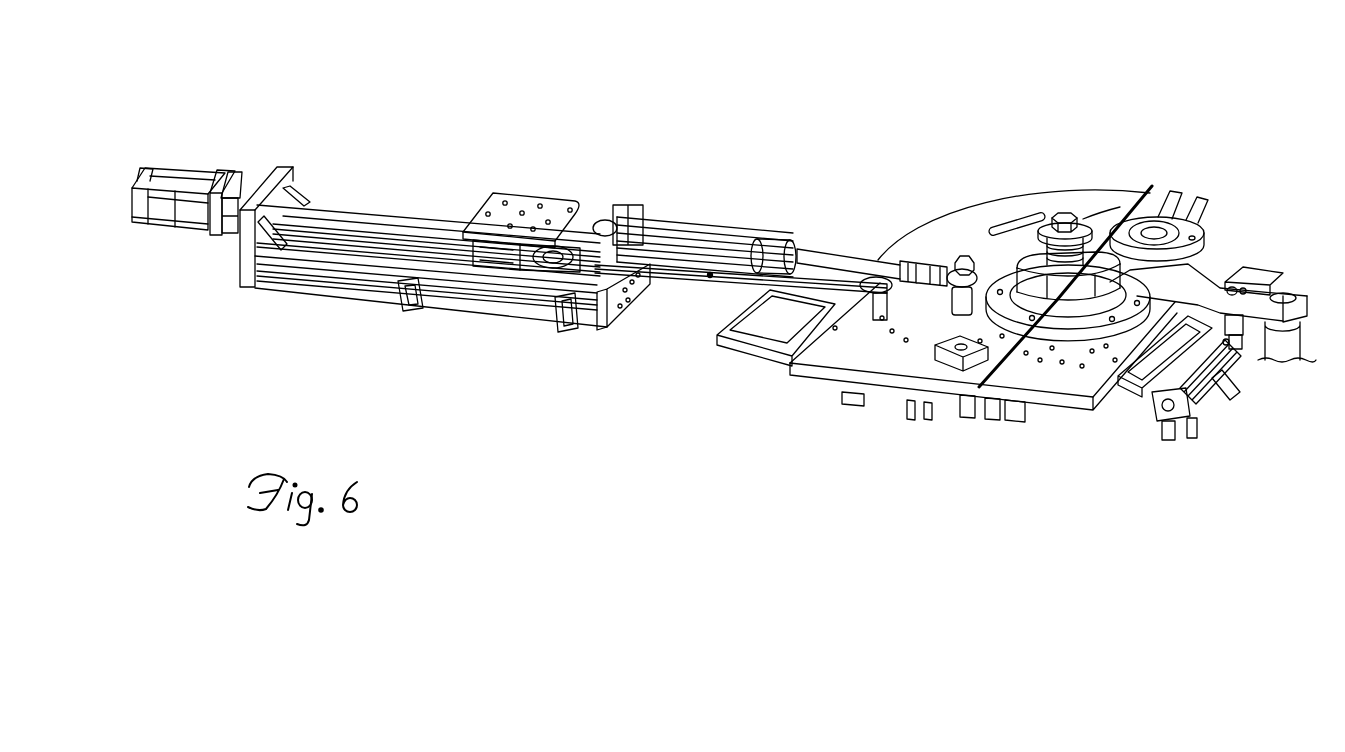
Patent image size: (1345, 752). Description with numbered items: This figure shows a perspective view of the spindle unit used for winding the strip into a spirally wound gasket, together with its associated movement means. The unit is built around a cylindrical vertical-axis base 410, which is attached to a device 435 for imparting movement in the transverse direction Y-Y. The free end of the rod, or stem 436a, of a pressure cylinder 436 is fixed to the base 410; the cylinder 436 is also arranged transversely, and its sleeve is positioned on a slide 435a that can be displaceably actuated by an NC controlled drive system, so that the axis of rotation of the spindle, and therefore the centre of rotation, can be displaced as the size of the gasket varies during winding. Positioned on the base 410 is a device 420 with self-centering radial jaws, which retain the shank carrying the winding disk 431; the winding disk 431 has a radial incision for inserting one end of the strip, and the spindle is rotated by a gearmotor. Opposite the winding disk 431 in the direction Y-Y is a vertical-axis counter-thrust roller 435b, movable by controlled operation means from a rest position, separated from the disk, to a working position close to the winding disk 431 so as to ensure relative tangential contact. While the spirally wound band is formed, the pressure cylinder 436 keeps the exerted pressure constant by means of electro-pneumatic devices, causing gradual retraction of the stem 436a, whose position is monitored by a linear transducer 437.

The cylindrical vertical-axis base 410 is at (1060, 325).
The device with self-centering radial jaws 420 is at (1071, 303).
The winding disk 431 is at (1041, 212).
The device for imparting movement in the transverse direction 435 is at (910, 236).
The slide 435a is at (468, 226).
The vertical-axis counter-thrust roller 435b is at (1204, 234).
The pressure cylinder 436 is at (665, 212).
The stem of the pressure cylinder 436a is at (819, 250).
The linear transducer 437 is at (708, 276).